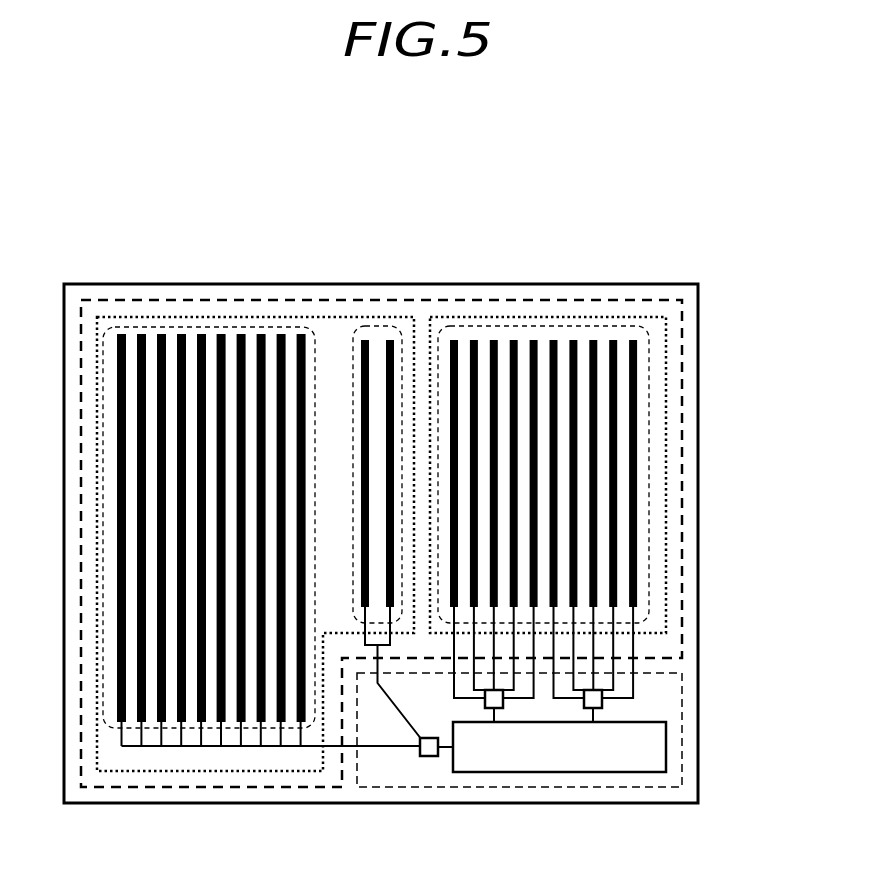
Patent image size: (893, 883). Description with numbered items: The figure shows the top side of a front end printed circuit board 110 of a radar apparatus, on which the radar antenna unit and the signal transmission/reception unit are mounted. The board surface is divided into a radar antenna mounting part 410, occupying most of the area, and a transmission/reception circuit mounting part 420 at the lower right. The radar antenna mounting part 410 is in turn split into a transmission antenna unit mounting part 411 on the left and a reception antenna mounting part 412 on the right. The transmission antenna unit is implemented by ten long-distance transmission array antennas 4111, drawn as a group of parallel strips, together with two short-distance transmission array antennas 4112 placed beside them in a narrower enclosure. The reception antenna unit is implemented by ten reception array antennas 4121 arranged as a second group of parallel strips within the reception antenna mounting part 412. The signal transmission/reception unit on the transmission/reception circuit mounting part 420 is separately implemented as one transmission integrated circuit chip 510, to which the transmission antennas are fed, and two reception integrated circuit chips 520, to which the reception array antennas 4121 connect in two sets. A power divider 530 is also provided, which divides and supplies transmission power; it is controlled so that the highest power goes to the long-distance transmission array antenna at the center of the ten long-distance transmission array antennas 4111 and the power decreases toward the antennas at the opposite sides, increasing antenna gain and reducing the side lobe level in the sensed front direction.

The front end printed circuit board 110 is at (86, 251).
The radar antenna mounting part 410 is at (682, 364).
The transmission antenna unit mounting part 411 is at (169, 772).
The reception antenna mounting part 412 is at (666, 434).
The long-distance transmission array antennas 4111 is at (195, 325).
The short-distance transmission array antennas 4112 is at (373, 325).
The reception array antennas 4121 is at (527, 325).
The transmission/reception circuit mounting part 420 is at (682, 752).
The transmission integrated circuit chip 510 is at (430, 757).
The reception integrated circuit chips 520 is at (503, 698).
The power divider 530 is at (563, 772).